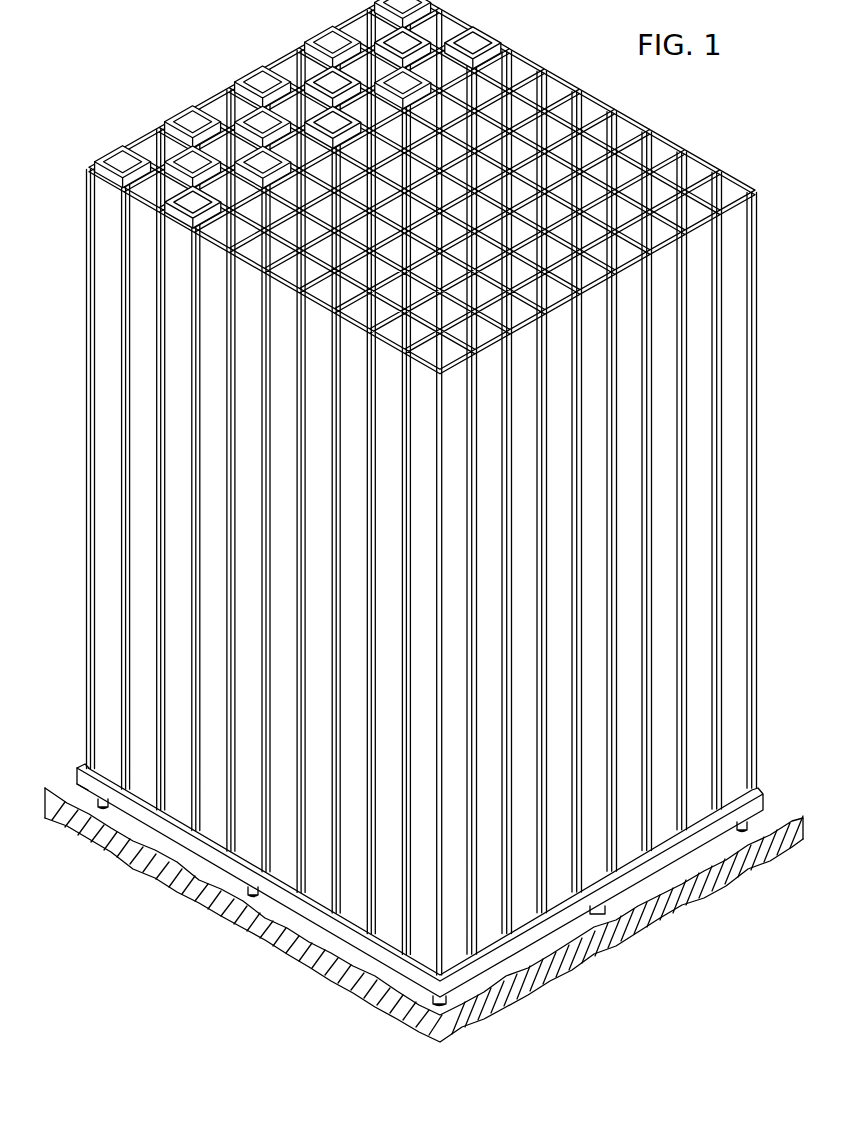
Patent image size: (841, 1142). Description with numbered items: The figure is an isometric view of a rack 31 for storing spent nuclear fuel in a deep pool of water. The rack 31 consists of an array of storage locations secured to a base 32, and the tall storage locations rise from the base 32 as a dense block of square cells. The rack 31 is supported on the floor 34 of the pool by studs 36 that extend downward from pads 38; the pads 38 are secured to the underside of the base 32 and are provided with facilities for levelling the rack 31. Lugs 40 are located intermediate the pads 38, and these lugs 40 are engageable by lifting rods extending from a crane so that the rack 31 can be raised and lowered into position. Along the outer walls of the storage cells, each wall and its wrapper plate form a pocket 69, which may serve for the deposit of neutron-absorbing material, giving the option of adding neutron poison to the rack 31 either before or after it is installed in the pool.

The rack 31 is at (401, 487).
The pocket 69 is at (498, 162).
The base 32 is at (190, 846).
The floor 34 is at (396, 976).
The studs 36 is at (105, 810).
The pads 38 is at (86, 786).
The lugs 40 is at (250, 896).